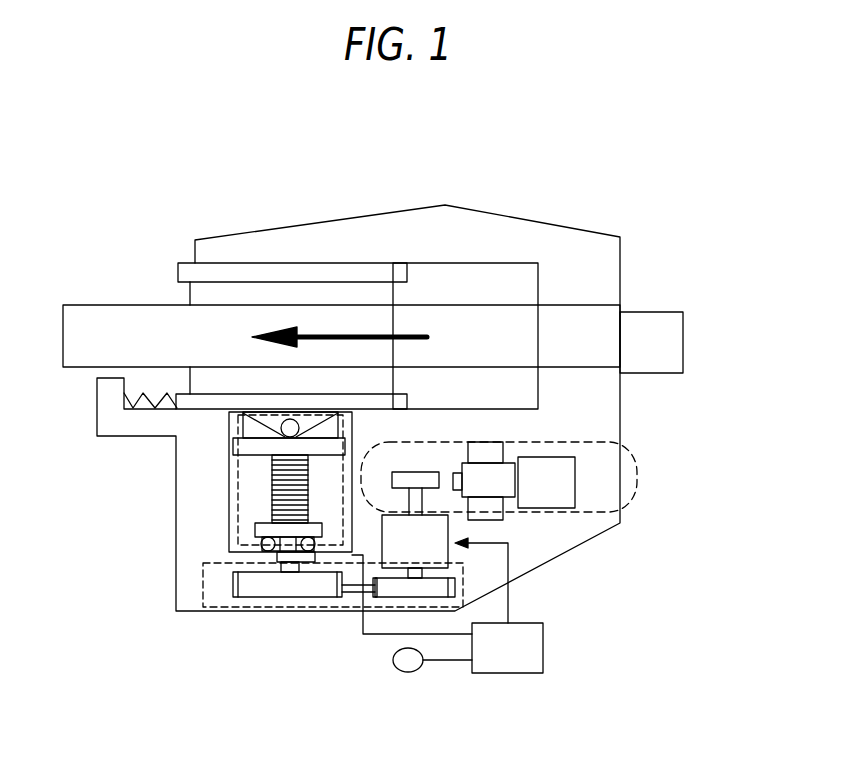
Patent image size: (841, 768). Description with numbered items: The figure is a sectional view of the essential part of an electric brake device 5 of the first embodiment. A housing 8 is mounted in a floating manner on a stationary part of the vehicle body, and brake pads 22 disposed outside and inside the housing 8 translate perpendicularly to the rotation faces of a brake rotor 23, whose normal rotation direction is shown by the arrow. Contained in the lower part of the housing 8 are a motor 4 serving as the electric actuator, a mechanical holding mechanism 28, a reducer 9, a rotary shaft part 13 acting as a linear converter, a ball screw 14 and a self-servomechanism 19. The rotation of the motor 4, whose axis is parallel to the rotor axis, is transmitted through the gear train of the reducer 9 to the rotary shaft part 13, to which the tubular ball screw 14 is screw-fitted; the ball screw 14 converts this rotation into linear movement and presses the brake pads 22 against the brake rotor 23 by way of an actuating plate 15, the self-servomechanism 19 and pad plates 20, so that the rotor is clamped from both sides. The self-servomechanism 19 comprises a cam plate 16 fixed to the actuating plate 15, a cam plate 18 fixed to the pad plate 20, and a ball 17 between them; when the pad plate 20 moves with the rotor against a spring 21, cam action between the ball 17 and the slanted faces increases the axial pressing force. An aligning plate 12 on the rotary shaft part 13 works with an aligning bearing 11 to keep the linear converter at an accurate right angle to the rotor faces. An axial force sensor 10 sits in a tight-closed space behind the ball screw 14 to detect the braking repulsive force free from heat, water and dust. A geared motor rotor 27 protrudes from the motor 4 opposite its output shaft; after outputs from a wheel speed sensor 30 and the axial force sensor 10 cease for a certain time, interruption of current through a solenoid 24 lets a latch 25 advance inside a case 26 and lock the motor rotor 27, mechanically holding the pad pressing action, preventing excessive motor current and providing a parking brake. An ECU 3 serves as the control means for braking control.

The ECU 3 is at (525, 673).
The motor 4 is at (427, 552).
The electric brake device 5 is at (690, 291).
The housing 8 is at (577, 243).
The reducer 9 is at (217, 597).
The axial force sensor 10 is at (267, 557).
The aligning bearing 11 is at (323, 595).
The aligning plate 12 is at (257, 530).
The rotary shaft part 13 is at (270, 503).
The ball screw 14 is at (250, 492).
The actuating plate 15 is at (232, 447).
The cam plate 16 is at (230, 417).
The ball 17 is at (292, 422).
The cam plate 18 is at (327, 420).
The self-servomechanism 19 is at (275, 437).
The pad plate 20 is at (63, 355).
The spring 21 is at (122, 400).
The brake pads 22 is at (230, 380).
The brake rotor 23 is at (467, 335).
The solenoid 24 is at (555, 482).
The latch 25 is at (498, 480).
The case 26 is at (493, 453).
The motor rotor 27 is at (427, 478).
The mechanical holding mechanism 28 is at (637, 467).
The wheel speed sensor 30 is at (413, 668).